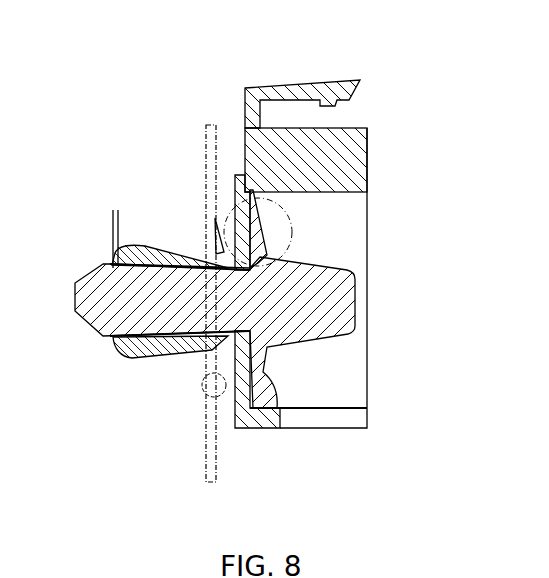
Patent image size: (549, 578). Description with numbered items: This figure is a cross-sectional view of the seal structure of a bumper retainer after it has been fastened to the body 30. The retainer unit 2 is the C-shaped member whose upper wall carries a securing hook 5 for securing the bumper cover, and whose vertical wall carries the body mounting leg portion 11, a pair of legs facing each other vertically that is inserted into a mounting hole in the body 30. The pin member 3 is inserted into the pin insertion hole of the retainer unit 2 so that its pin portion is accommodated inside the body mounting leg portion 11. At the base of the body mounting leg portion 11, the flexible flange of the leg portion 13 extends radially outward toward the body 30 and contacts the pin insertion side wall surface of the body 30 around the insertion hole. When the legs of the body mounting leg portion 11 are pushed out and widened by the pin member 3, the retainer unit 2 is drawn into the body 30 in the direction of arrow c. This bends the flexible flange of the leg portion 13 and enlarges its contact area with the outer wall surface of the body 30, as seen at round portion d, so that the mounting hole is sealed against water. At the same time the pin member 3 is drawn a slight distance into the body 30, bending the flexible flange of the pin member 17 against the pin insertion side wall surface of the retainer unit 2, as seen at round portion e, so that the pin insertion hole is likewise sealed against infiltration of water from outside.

The retainer unit 2 is at (374, 149).
The pin member 3 is at (340, 257).
The securing hook 5 is at (338, 86).
The body mounting leg portion 11 is at (138, 248).
The flexible flange of the leg portion 13 is at (215, 238).
The flexible flange of the pin member 17 is at (281, 410).
The body 30 is at (205, 130).
The round portion e is at (274, 205).
The arrow c is at (285, 227).
The round portion d is at (193, 389).